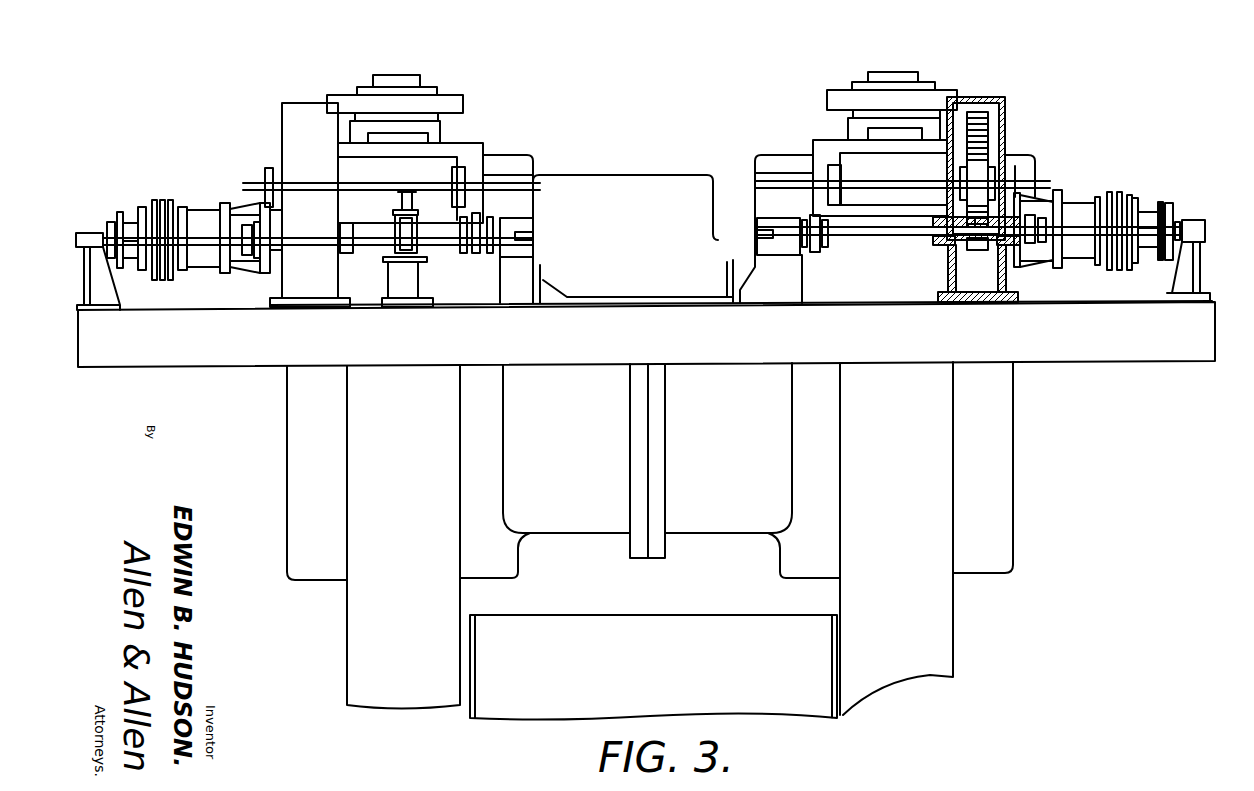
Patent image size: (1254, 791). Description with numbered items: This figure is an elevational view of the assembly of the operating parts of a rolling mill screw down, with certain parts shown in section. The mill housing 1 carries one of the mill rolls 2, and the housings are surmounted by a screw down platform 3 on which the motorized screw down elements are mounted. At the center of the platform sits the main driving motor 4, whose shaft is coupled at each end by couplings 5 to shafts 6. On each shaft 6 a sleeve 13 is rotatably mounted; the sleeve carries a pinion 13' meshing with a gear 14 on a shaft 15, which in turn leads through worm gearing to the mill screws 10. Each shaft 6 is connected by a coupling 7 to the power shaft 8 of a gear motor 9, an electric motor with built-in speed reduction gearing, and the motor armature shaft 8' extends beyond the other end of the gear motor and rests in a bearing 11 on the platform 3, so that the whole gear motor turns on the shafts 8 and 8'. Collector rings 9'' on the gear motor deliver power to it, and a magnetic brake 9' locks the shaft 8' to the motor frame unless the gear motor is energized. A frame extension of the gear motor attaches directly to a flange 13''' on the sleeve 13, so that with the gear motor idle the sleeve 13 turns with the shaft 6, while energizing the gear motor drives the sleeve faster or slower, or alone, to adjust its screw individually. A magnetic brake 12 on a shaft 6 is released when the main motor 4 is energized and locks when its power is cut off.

The mill housing 1 is at (370, 598).
The mill roll 2 is at (732, 600).
The screw down platform 3 is at (700, 346).
The main driving motor 4 is at (640, 163).
The coupling 5 is at (481, 252).
The shaft 6 is at (452, 248).
The coupling 7 is at (252, 248).
The power shaft 8 is at (658, 208).
The motor armature shaft 8' is at (1194, 194).
The gear motor 9 is at (656, 208).
The magnetic brake 9' is at (644, 216).
The collector rings 9'' is at (643, 229).
The mill screw 10 is at (416, 72).
The bearing 11 is at (87, 231).
The magnetic brake 12 is at (399, 281).
The sleeve 13 is at (947, 252).
The pinion 13' is at (993, 251).
The flange 13''' is at (1009, 285).
The gear 14 is at (994, 139).
The shaft 15 is at (960, 163).